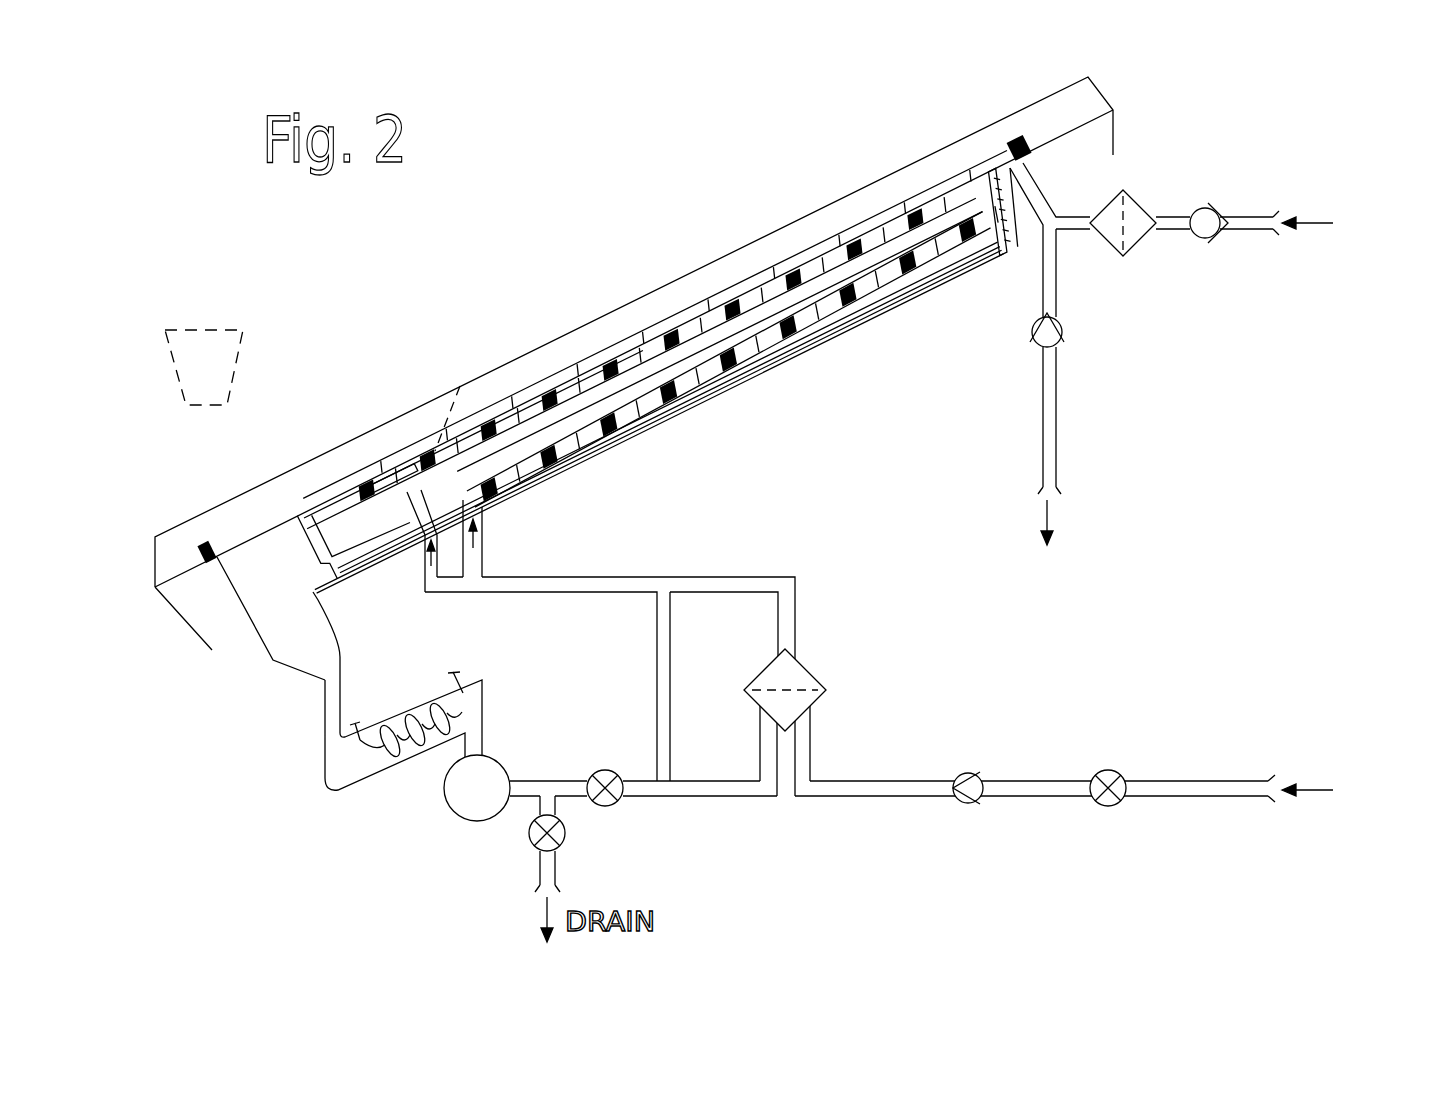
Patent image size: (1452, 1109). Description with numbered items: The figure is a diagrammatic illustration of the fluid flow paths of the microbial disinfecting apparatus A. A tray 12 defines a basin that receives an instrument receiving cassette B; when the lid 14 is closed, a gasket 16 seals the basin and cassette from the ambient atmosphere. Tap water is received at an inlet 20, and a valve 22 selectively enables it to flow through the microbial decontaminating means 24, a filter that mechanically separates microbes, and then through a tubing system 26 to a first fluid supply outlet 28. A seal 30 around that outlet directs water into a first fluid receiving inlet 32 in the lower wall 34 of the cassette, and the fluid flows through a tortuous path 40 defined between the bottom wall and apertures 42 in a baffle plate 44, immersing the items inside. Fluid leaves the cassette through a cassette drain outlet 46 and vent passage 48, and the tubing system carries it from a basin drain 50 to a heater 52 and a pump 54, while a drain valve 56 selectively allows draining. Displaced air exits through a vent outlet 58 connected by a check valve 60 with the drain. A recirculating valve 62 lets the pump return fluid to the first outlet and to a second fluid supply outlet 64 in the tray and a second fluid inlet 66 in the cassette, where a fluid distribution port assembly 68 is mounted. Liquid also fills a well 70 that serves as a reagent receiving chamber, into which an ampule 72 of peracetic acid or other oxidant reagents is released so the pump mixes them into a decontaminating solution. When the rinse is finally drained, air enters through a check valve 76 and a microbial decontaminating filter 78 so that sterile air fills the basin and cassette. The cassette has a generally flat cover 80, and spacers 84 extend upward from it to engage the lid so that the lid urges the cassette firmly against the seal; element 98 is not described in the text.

The tray 12 is at (1016, 245).
The lid 14 is at (665, 286).
The gasket 16 is at (212, 553).
The inlet 20 is at (1195, 778).
The valve 22 is at (1110, 768).
The microbial decontaminating means 24 is at (810, 672).
The tubing system 26 is at (812, 552).
The first fluid supply outlet 28 is at (484, 522).
The seal 30 is at (497, 508).
The first fluid receiving inlet 32 is at (545, 478).
The lower wall 34 is at (905, 300).
The tortuous path 40 is at (680, 378).
The apertures 42 is at (503, 450).
The baffle plate 44 is at (560, 432).
The cassette drain outlet 46 is at (357, 570).
The vent passage 48 is at (987, 172).
The basin drain 50 is at (322, 585).
The heater 52 is at (410, 720).
The pump 54 is at (458, 815).
The drain valve 56 is at (535, 845).
The vent outlet 58 is at (1032, 197).
The check valve 60 is at (1065, 342).
The recirculating valve 62 is at (597, 770).
The second fluid supply outlet 64 is at (440, 548).
The second fluid inlet 66 is at (447, 488).
The fluid distribution port assembly 68 is at (447, 376).
The well 70 is at (262, 628).
The ampule 72 is at (187, 323).
The check valve 76 is at (1212, 237).
The microbial decontaminating filter 78 is at (1140, 200).
The cover 80 is at (703, 300).
The spacers 84 is at (877, 215).
The layer 98 is at (648, 405).
The microbial disinfecting apparatus A is at (1150, 140).
The instrument receiving cassette B is at (845, 285).